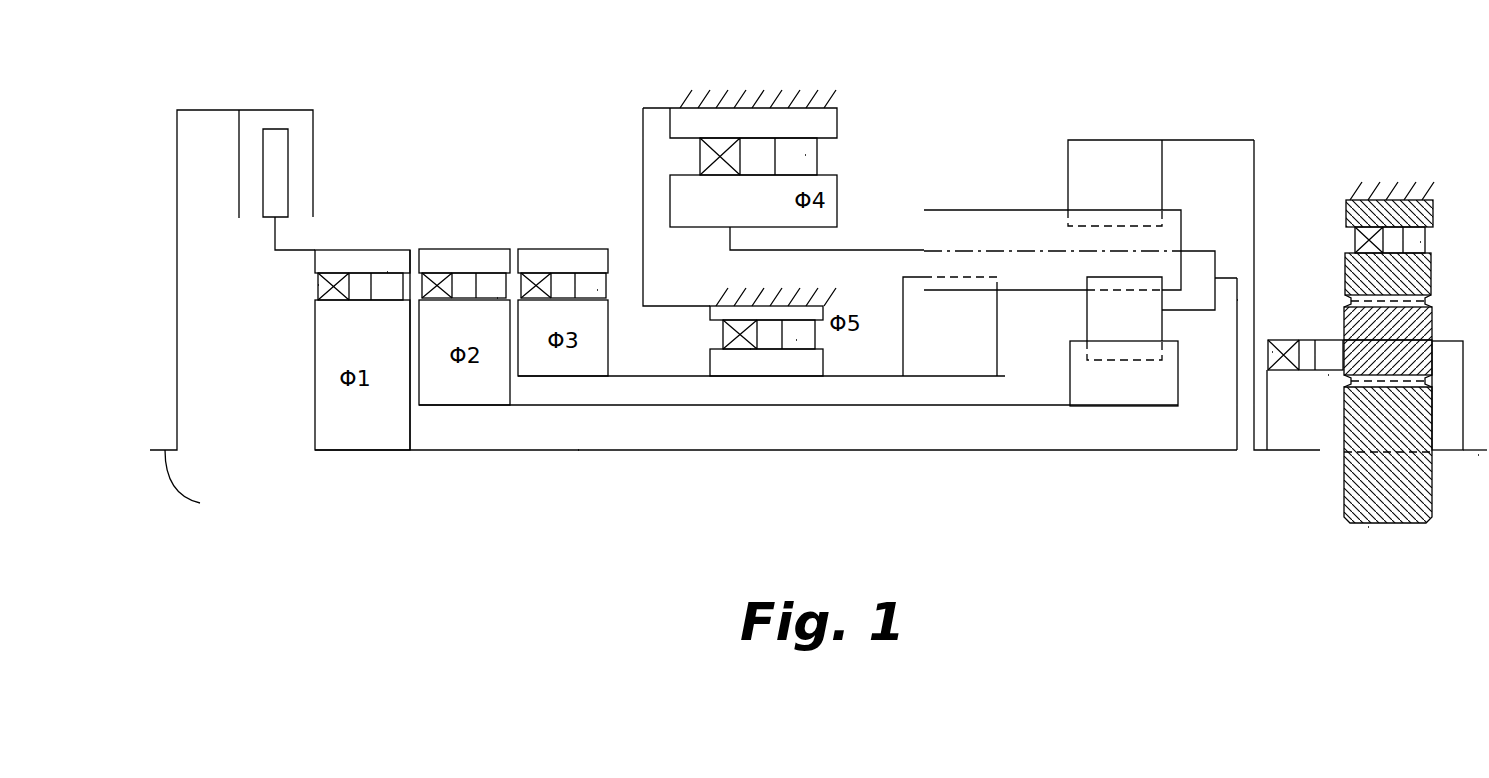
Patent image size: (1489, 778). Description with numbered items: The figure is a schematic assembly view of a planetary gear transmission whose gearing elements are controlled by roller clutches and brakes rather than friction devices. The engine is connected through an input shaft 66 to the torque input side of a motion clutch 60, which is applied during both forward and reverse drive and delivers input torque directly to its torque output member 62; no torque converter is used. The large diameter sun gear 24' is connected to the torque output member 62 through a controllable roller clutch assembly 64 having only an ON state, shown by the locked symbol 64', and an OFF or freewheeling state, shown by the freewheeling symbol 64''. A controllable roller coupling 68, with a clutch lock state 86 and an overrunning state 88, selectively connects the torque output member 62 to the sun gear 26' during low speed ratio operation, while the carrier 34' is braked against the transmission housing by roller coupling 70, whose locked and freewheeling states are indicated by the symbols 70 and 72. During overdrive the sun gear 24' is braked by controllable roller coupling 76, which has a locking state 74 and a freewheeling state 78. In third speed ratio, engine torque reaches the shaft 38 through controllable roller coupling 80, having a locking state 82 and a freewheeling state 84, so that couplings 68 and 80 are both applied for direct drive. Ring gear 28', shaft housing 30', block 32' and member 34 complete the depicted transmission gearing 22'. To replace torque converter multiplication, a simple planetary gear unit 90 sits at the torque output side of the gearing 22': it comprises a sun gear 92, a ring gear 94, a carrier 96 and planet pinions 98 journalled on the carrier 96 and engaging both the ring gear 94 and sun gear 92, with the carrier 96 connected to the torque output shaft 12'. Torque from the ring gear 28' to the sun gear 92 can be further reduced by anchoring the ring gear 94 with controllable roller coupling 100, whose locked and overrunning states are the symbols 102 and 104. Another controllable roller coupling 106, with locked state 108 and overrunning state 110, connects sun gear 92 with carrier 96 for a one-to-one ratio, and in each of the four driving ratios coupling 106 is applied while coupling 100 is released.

The torque output shaft 12' is at (1458, 505).
The transmission gearing 22' is at (1052, 188).
The large diameter sun gear 24' is at (974, 393).
The sun gear 26' is at (1124, 425).
The ring gear 28' is at (1141, 147).
The shaft housing 30' is at (1048, 208).
The lower bearing block 32' is at (1090, 318).
The coupling member 34 is at (1199, 321).
The carrier 34' is at (1237, 253).
The shaft 38 is at (578, 450).
The motion clutch 60 is at (320, 172).
The torque output member 62 is at (374, 248).
The controllable roller clutch assembly 64 is at (563, 217).
The locked symbol 64' is at (563, 229).
The freewheeling symbol 64'' is at (644, 324).
The input shaft 66 is at (200, 481).
The controllable roller coupling 68 is at (453, 240).
The roller coupling 70 is at (720, 145).
The freewheeling symbol 72 is at (805, 155).
The locking state symbol 74 is at (750, 349).
The controllable roller coupling 76 is at (733, 356).
The freewheeling state symbol 78 is at (796, 340).
The controllable roller coupling 80 is at (332, 305).
The locking state symbol 82 is at (318, 285).
The freewheeling state symbol 84 is at (387, 272).
The clutch lock state symbol 86 is at (440, 298).
The overrunning state symbol 88 is at (497, 298).
The simple planetary gear unit 90 is at (1368, 535).
The sun gear 92 is at (1417, 418).
The ring gear 94 is at (1415, 270).
The carrier 96 is at (1443, 340).
The planet pinions 98 is at (1360, 315).
The controllable roller coupling 100 is at (1413, 224).
The locked state symbol 102 is at (1370, 228).
The overrunning state symbol 104 is at (1420, 242).
The controllable roller coupling 106 is at (1281, 392).
The locked state symbol 108 is at (1268, 358).
The overrunning state symbol 110 is at (1328, 375).